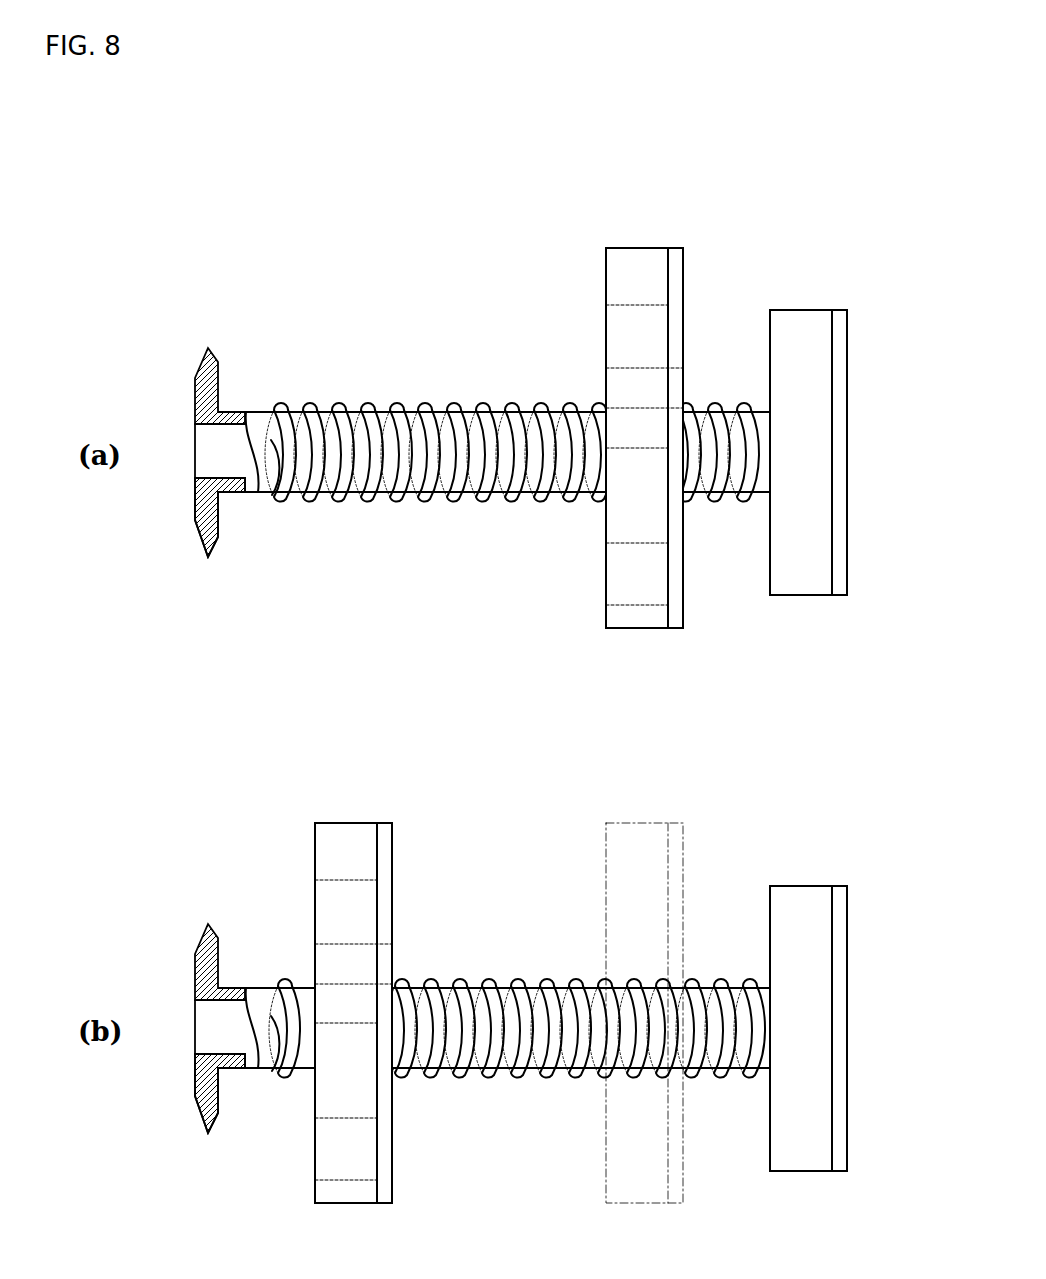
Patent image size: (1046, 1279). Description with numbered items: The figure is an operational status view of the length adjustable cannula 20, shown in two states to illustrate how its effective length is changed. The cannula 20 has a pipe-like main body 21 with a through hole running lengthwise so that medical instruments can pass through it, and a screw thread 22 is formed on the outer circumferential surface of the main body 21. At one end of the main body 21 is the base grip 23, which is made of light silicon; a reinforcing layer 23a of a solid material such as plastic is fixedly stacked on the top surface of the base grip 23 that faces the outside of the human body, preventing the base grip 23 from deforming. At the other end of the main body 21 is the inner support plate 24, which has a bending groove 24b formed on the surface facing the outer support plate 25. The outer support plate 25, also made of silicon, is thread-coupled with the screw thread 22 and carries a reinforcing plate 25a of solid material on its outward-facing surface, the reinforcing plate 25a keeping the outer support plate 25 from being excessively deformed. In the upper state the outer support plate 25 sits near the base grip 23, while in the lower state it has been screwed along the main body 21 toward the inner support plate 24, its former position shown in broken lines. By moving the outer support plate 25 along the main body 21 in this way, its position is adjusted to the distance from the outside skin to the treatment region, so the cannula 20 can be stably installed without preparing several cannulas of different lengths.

The length adjustable cannula 20 is at (221, 202).
The main body 21 is at (252, 410).
The screw thread 22 is at (368, 410).
The base grip 23 is at (790, 312).
The reinforcing layer 23a is at (841, 378).
The inner support plate 24 is at (193, 404).
The bending groove 24b is at (218, 532).
The outer support plate 25 is at (641, 248).
The reinforcing plate 25a is at (675, 275).